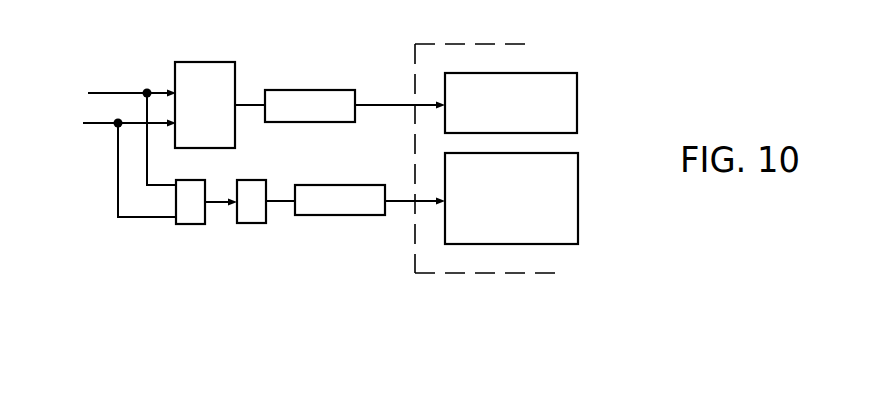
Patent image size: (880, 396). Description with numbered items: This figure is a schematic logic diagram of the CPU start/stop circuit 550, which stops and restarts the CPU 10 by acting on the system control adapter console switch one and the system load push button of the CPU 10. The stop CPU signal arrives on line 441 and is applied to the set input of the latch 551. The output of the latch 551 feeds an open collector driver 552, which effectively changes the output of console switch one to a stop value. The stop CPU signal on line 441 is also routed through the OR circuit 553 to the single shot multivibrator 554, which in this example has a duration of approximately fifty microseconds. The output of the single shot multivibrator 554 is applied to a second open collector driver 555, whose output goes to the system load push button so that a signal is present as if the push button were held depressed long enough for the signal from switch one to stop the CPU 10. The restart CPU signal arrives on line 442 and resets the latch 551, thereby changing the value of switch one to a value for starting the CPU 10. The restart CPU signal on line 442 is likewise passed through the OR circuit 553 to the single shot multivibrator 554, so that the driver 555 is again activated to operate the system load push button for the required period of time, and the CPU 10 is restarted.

The stop CPU signal line 441 is at (120, 90).
The restart CPU signal line 442 is at (101, 139).
The latch 551 is at (236, 80).
The open collector driver 552 is at (322, 88).
The OR circuit 553 is at (205, 177).
The single shot multivibrator 554 is at (268, 178).
The open collector driver 555 is at (367, 185).
The CPU start/stop circuit 550 is at (369, 55).
The CPU 10 is at (472, 275).